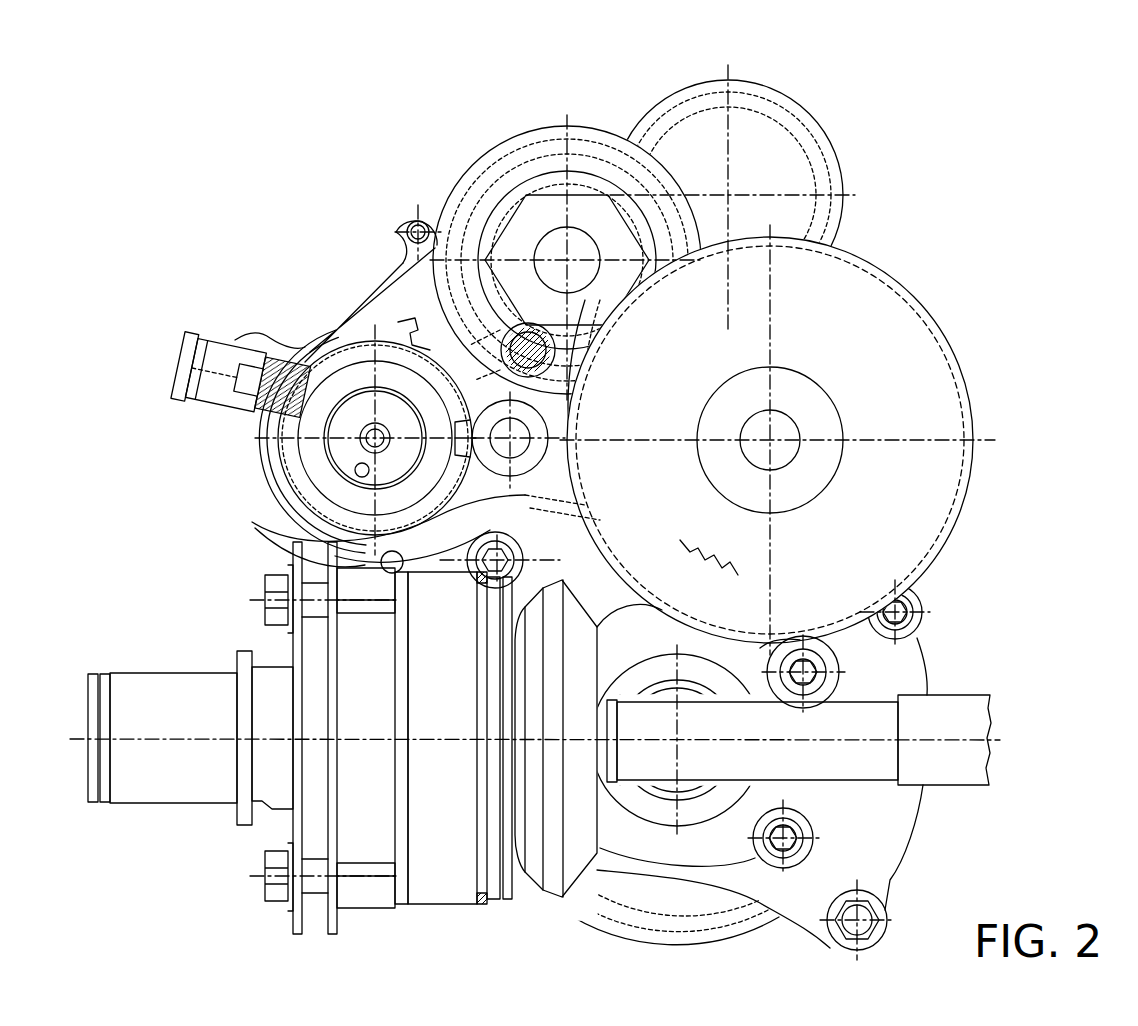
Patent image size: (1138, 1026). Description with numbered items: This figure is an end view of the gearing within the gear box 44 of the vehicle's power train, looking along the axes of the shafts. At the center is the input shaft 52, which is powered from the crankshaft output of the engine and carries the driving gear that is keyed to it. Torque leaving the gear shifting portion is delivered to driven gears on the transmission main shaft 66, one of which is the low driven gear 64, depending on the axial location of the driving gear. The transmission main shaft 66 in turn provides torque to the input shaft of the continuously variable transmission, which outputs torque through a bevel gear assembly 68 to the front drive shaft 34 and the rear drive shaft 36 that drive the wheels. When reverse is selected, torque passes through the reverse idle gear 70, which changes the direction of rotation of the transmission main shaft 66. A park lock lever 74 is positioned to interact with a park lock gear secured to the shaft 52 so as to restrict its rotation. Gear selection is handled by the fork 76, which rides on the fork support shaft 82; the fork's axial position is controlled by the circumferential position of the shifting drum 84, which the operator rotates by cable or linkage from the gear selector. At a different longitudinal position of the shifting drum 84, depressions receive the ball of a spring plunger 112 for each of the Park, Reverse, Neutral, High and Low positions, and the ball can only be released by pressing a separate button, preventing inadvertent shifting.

The front drive shaft 34 is at (960, 710).
The rear drive shaft 36 is at (82, 770).
The gear box 44 is at (876, 108).
The input shaft 52 is at (787, 430).
The low driven gear 64 is at (882, 356).
The transmission main shaft 66 is at (572, 235).
The bevel gear assembly 68 is at (588, 882).
The reverse idle gear 70 is at (786, 177).
The park lock lever 74 is at (523, 498).
The fork 76 is at (527, 355).
The fork support shaft 82 is at (500, 432).
The shifting drum 84 is at (318, 455).
The spring plunger 112 is at (242, 348).